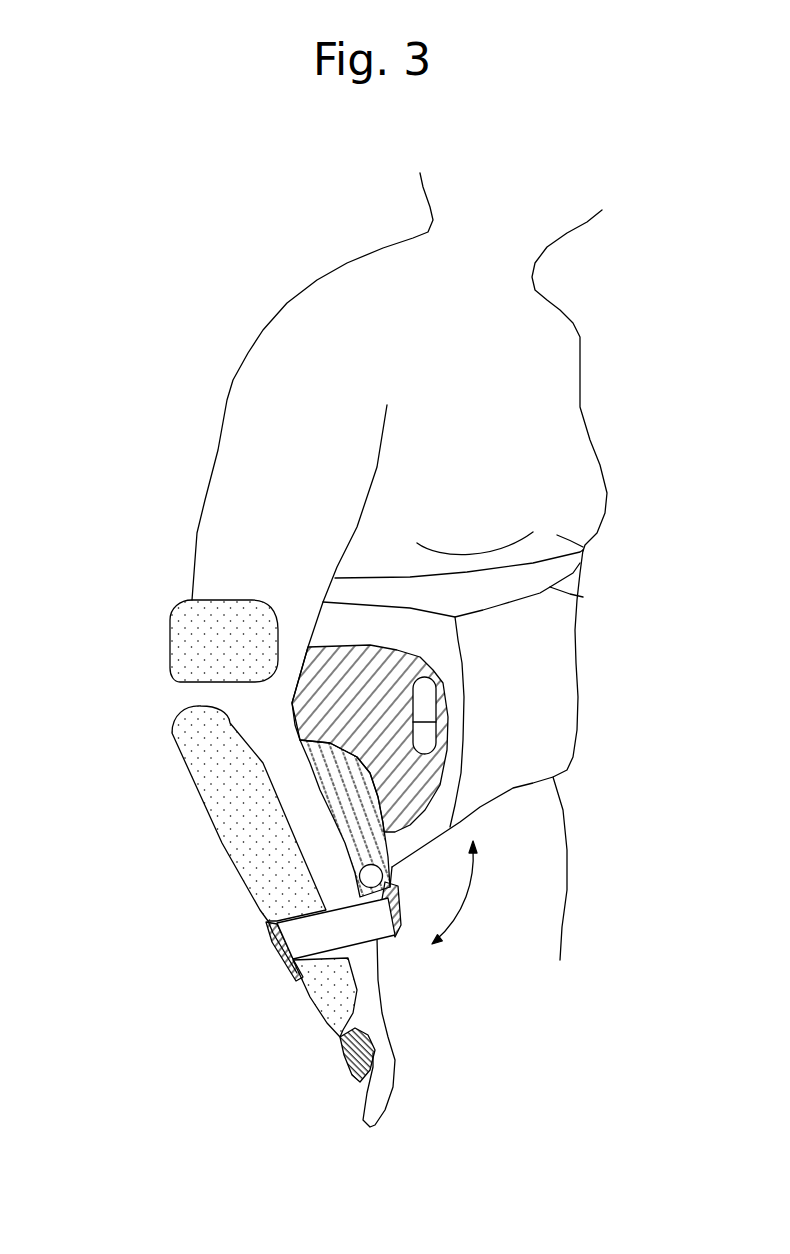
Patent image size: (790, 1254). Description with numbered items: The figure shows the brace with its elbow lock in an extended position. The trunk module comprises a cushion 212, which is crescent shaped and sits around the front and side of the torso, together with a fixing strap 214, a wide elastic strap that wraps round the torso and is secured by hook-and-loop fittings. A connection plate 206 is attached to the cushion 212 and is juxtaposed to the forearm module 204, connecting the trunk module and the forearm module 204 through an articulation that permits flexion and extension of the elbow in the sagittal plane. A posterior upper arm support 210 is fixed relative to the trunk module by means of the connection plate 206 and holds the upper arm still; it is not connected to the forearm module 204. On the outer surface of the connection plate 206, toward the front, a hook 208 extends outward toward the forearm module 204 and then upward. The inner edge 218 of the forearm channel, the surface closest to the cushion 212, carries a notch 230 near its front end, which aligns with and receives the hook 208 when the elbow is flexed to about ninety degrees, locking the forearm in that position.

The forearm module 204 is at (227, 840).
The connection plate 206 is at (325, 702).
The hook 208 is at (430, 699).
The posterior upper arm support 210 is at (195, 645).
The cushion 212 is at (367, 587).
The fixing strap 214 is at (583, 597).
The inner edge of the channel 218 is at (392, 832).
The notch 230 is at (359, 879).